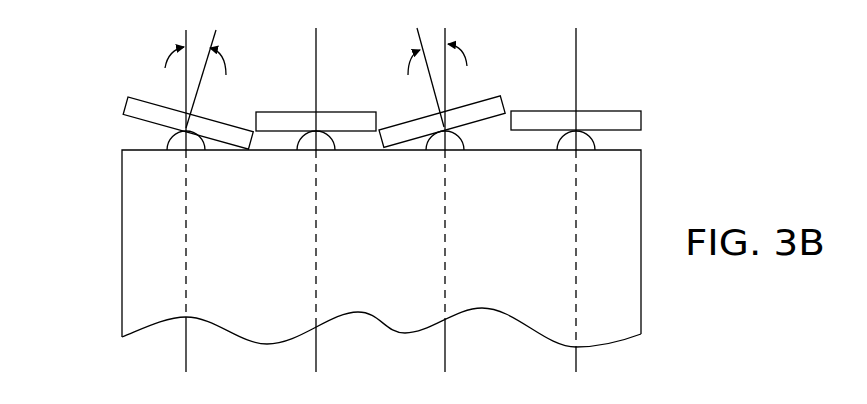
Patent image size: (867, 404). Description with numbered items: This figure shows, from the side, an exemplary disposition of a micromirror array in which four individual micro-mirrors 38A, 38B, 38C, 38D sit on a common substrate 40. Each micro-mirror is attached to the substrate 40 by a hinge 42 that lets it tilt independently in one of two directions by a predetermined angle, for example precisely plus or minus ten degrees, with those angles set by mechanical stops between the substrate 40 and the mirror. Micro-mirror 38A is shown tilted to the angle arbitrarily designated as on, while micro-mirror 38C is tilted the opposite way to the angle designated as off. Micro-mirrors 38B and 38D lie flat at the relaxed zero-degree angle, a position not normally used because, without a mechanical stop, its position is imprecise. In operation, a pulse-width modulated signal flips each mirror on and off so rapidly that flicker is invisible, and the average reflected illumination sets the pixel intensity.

The micro-mirror 38A is at (125, 113).
The micro-mirror 38B is at (348, 111).
The micro-mirror 38C is at (500, 95).
The micro-mirror 38D is at (615, 111).
The substrate 40 is at (143, 243).
The hinge 42 is at (167, 140).